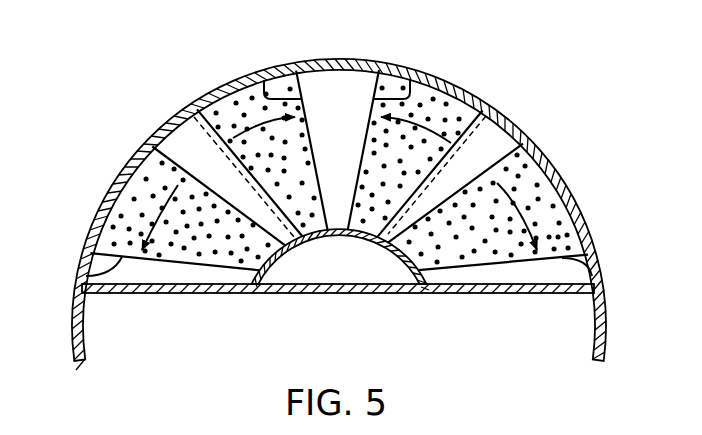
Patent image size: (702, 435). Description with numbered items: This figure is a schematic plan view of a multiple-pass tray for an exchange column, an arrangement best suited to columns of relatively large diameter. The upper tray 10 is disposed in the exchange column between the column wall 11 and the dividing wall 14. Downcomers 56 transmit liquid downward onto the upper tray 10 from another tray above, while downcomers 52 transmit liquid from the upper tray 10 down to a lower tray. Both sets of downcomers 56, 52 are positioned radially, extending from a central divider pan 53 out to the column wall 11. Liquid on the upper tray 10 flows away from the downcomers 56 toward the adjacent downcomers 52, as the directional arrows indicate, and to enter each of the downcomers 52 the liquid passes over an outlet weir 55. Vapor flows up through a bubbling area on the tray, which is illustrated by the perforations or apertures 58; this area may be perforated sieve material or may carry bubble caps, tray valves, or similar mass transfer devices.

The upper tray 10 is at (606, 159).
The column wall 11 is at (100, 203).
The dividing wall 14 is at (140, 294).
The downcomers 52 is at (340, 100).
The divider pan 53 is at (345, 235).
The outlet weir 55 is at (264, 80).
The downcomers 56 is at (192, 148).
The perforations or apertures 58 is at (561, 236).